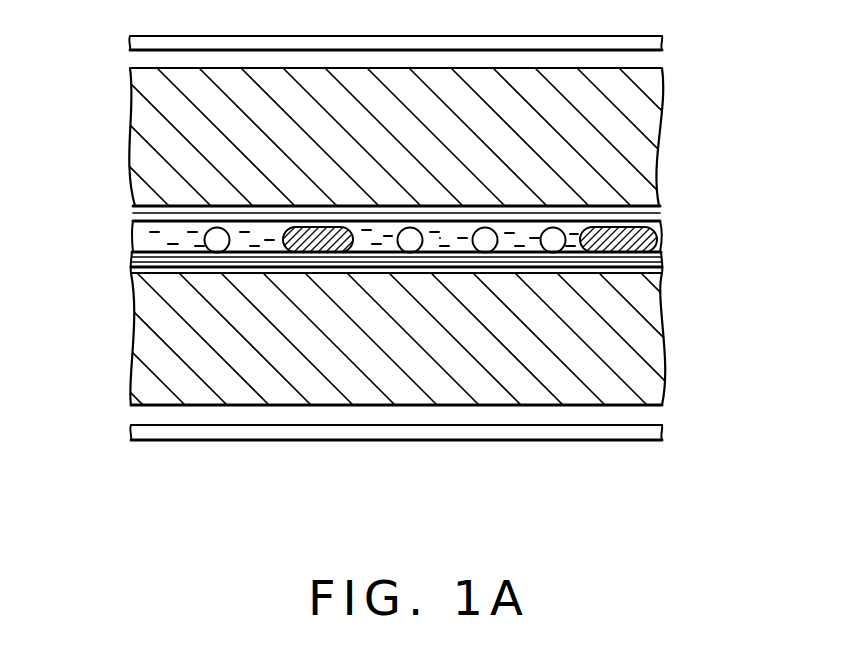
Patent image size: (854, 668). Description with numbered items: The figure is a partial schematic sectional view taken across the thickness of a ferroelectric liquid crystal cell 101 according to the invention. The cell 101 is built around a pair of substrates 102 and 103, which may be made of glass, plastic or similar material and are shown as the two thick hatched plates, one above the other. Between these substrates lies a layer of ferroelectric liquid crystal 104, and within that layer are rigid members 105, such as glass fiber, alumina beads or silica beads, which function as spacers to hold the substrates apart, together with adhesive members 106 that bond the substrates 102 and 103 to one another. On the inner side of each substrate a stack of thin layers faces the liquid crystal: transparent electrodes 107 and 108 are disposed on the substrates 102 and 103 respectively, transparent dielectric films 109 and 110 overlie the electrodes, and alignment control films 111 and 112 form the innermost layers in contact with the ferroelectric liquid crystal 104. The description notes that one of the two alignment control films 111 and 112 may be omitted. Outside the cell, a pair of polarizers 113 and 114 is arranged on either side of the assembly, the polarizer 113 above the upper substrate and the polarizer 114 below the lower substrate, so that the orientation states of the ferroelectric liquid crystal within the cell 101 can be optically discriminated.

The ferroelectric liquid crystal cell 101 is at (672, 101).
The substrate 102 is at (650, 136).
The substrate 103 is at (659, 350).
The ferroelectric liquid crystal 104 is at (143, 238).
The rigid members 105 is at (407, 245).
The adhesive members 106 is at (320, 250).
The transparent electrode 107 is at (661, 207).
The transparent electrode 108 is at (131, 268).
The transparent dielectric film 109 is at (660, 208).
The transparent dielectric film 110 is at (131, 262).
The alignment control film 111 is at (659, 221).
The alignment control film 112 is at (130, 257).
The polarizer 113 is at (662, 44).
The polarizer 114 is at (663, 433).